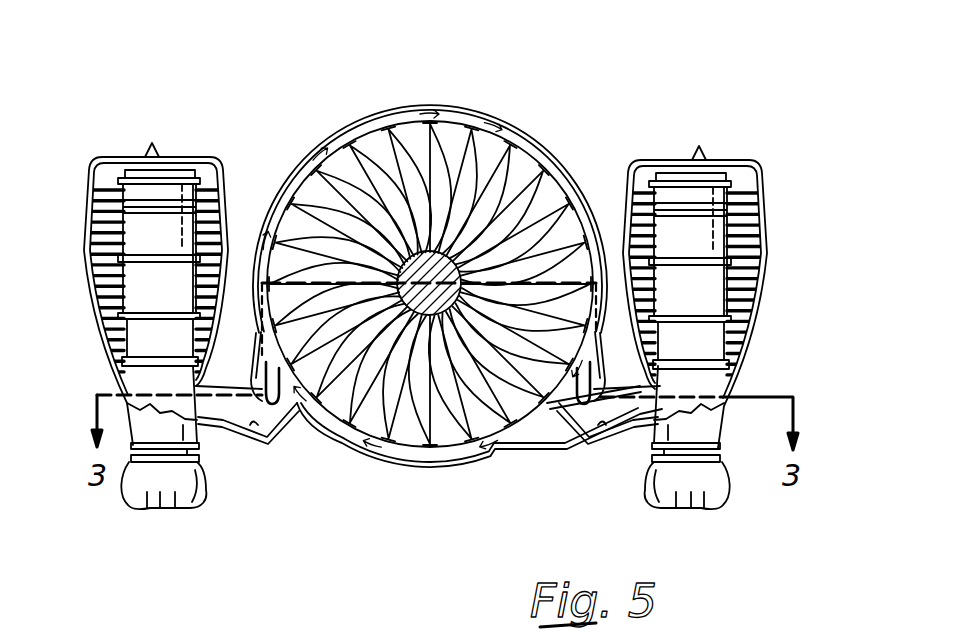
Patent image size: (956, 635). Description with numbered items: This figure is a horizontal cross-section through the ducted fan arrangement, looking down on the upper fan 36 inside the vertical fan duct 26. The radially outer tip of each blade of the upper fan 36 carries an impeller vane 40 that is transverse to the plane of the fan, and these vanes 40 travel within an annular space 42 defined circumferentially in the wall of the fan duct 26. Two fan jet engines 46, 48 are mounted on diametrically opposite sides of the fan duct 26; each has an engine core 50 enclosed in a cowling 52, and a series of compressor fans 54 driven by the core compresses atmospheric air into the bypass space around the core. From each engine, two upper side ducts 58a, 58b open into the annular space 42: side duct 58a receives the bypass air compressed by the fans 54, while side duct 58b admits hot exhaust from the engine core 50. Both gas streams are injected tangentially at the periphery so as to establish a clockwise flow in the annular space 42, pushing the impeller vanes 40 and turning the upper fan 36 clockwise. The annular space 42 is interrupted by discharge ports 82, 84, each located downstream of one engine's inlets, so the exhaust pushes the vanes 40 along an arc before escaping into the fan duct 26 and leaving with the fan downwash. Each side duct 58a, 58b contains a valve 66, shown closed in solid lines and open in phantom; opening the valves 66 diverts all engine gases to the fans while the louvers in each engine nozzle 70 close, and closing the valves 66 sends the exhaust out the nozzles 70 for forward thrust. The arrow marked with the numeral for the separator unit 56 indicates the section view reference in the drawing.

The fan duct 26 is at (522, 166).
The upper fan 36 is at (420, 285).
The impeller vane 40 is at (292, 170).
The annular space 42 is at (325, 142).
The discharge port 82 is at (438, 107).
The discharge port 84 is at (352, 458).
The upper side duct 58a is at (266, 437).
The upper side duct 58b is at (215, 425).
The cyclonic separator unit 56 is at (449, 336).
The cowling 52 is at (90, 250).
The compressor fans 54 is at (112, 298).
The fan jet engine 46 is at (123, 318).
The fan jet engine 48 is at (758, 303).
The engine core 50 is at (127, 335).
The valve 66 is at (195, 362).
The engine nozzle 70 is at (155, 505).